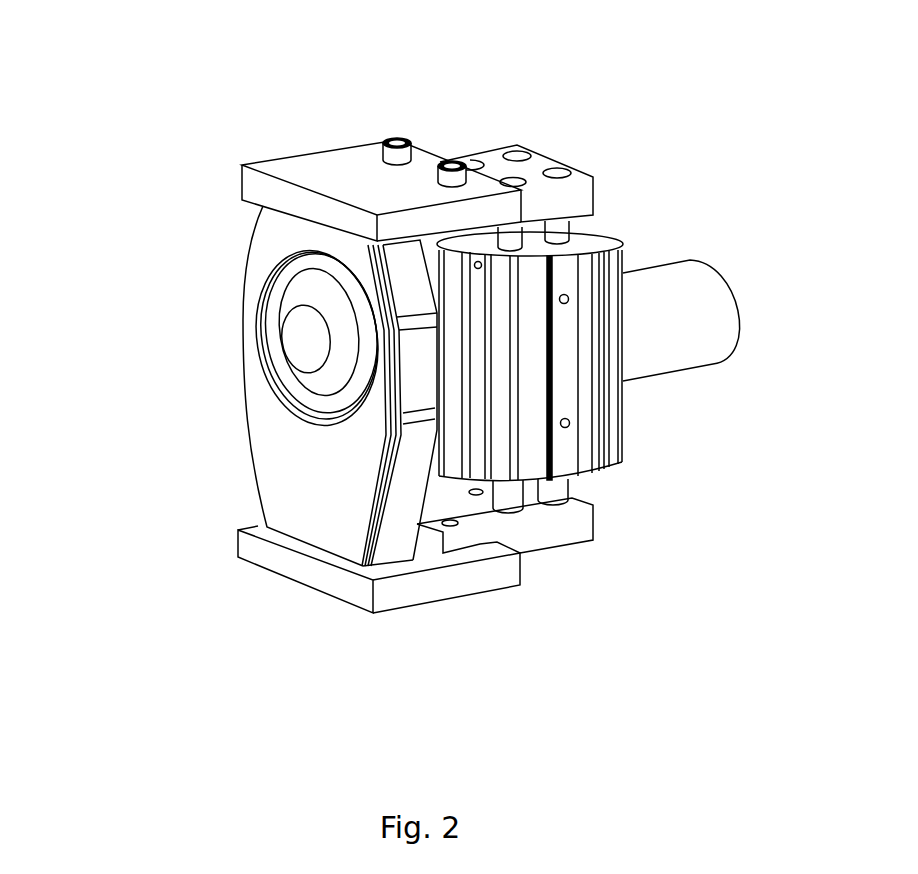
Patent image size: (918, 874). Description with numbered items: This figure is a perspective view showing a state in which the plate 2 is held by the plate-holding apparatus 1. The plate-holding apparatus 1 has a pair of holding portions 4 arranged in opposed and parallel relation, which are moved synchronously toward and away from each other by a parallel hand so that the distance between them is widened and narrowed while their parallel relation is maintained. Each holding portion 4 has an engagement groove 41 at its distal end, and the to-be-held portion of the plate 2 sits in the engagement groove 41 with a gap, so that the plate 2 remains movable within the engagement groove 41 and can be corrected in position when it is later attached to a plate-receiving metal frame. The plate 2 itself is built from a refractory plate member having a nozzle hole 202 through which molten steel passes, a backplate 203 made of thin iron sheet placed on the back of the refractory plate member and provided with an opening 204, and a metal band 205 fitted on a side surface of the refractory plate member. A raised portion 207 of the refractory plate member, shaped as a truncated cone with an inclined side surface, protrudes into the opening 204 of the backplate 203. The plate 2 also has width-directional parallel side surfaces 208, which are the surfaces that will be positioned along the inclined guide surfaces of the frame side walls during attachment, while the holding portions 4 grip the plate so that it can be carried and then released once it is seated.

The plate-holding apparatus 1 is at (557, 147).
The plate 2 is at (250, 490).
The holding portion 4 is at (283, 166).
The engagement groove 41 is at (382, 540).
The nozzle hole 202 is at (303, 347).
The backplate 203 is at (272, 431).
The opening 204 is at (299, 255).
The metal band 205 is at (400, 536).
The raised portion 207 is at (285, 305).
The width-directional parallel side surface 208 is at (422, 368).